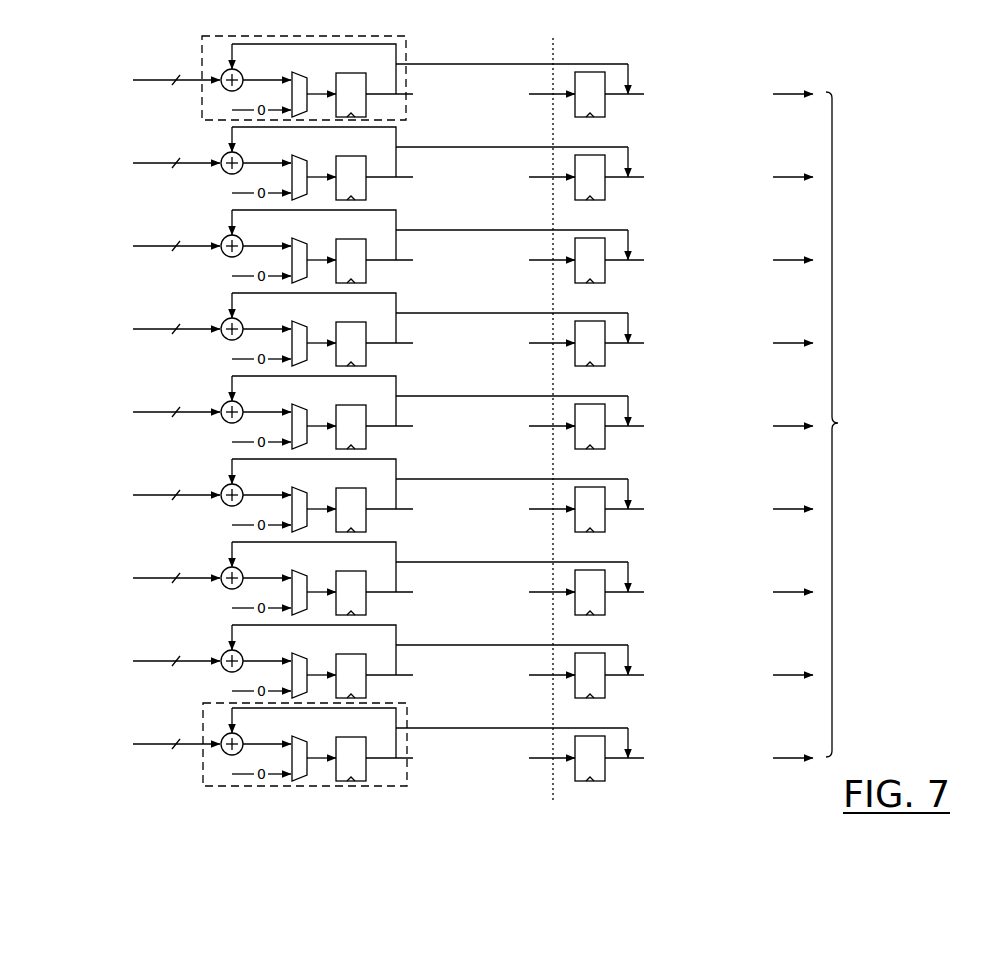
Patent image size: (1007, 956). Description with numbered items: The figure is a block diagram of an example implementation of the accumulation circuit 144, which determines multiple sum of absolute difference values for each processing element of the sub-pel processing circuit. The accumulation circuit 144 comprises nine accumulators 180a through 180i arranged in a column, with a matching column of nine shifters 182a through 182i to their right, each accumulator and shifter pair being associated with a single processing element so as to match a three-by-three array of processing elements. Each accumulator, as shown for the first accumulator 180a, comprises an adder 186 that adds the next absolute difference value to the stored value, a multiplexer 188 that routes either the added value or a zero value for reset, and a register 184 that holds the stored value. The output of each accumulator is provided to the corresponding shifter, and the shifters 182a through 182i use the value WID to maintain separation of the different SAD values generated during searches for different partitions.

The accumulation circuit 144 is at (62, 52).
The accumulator 180a is at (293, 87).
The accumulator 180i is at (296, 752).
The shifter 182a is at (604, 99).
The shifter 182i is at (604, 763).
The register 184 is at (360, 85).
The adder 186 is at (247, 67).
The multiplexer 188 is at (283, 86).